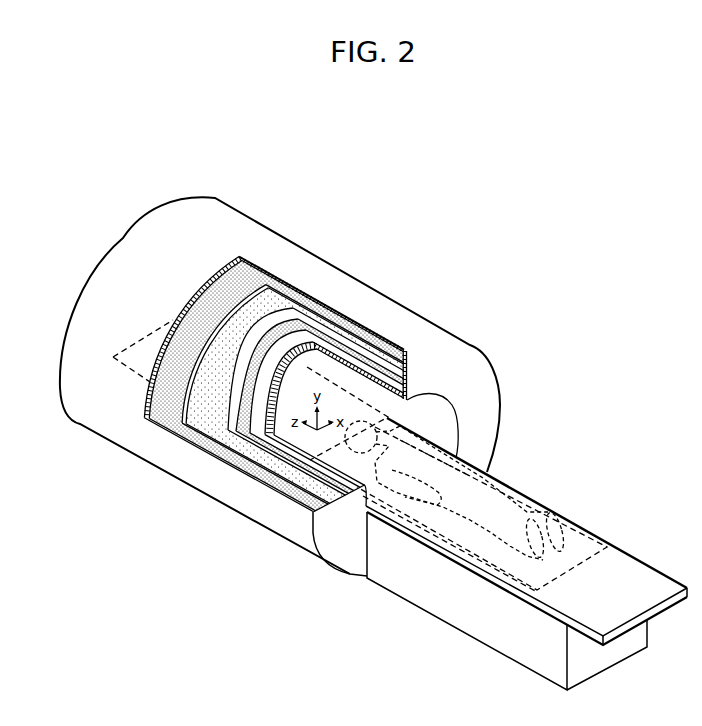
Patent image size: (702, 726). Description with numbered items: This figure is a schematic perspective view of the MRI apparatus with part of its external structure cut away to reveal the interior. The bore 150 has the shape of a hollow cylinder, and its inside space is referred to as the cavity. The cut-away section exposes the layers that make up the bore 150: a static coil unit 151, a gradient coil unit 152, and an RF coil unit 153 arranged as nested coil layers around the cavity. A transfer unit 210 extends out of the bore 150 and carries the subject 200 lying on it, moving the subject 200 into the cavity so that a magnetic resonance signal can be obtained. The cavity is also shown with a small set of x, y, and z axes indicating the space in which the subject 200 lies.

The bore 150 is at (200, 213).
The static coil unit 151 is at (249, 272).
The gradient coil unit 152 is at (273, 306).
The RF coil unit 153 is at (298, 319).
The subject 200 is at (498, 497).
The transfer unit 210 is at (594, 542).